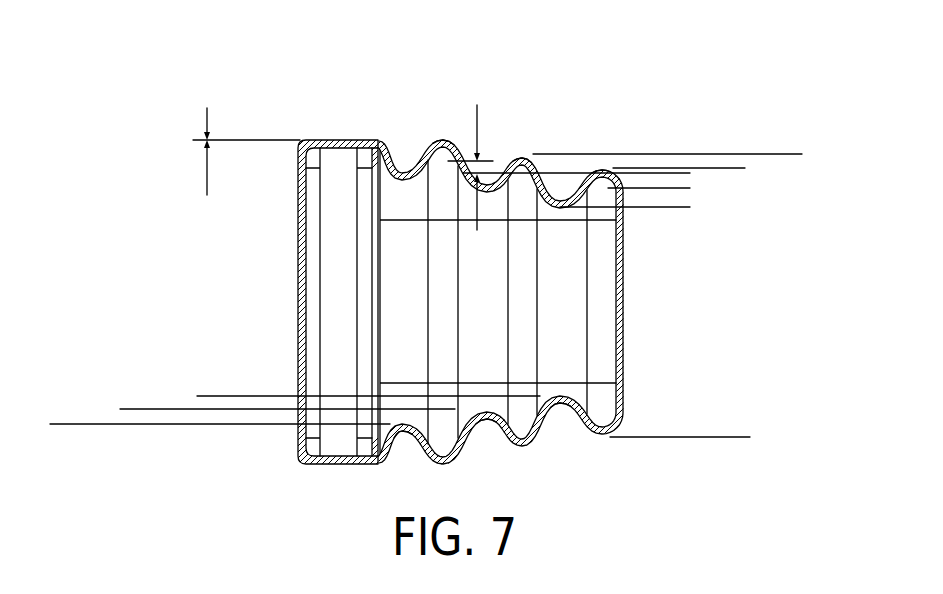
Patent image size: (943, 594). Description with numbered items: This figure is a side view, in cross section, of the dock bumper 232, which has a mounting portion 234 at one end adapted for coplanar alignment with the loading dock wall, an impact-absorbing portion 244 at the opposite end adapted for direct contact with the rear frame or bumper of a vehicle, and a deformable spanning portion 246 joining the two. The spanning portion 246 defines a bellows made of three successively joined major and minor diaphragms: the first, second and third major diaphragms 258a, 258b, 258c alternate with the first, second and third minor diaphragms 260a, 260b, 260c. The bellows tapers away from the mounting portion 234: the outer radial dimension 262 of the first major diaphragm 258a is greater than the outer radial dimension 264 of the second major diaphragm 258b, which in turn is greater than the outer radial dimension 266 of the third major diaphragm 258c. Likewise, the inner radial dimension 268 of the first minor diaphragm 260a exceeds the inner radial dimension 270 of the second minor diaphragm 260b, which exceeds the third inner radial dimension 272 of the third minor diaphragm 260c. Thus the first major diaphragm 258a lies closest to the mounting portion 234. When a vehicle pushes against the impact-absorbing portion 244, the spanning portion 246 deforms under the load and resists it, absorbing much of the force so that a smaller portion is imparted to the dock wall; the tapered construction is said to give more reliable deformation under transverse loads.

The bumper 232 is at (172, 120).
The mounting portion 234 is at (298, 384).
The impact-absorbing portion 244 is at (624, 255).
The deformable spanning portion 246 is at (487, 336).
The first major diaphragm 258a is at (440, 138).
The second major diaphragm 258b is at (523, 159).
The third major diaphragm 258c is at (601, 170).
The first minor diaphragm 260a is at (398, 430).
The second minor diaphragm 260b is at (485, 416).
The third minor diaphragm 260c is at (562, 202).
The outer radial dimension of first major diaphragm 262 is at (250, 146).
The outer radial dimension of second major diaphragm 264 is at (792, 160).
The outer radial dimension of third major diaphragm 266 is at (727, 174).
The inner radial dimension of first minor diaphragm 268 is at (62, 417).
The inner radial dimension of second minor diaphragm 270 is at (137, 402).
The third inner radial dimension 272 is at (205, 389).